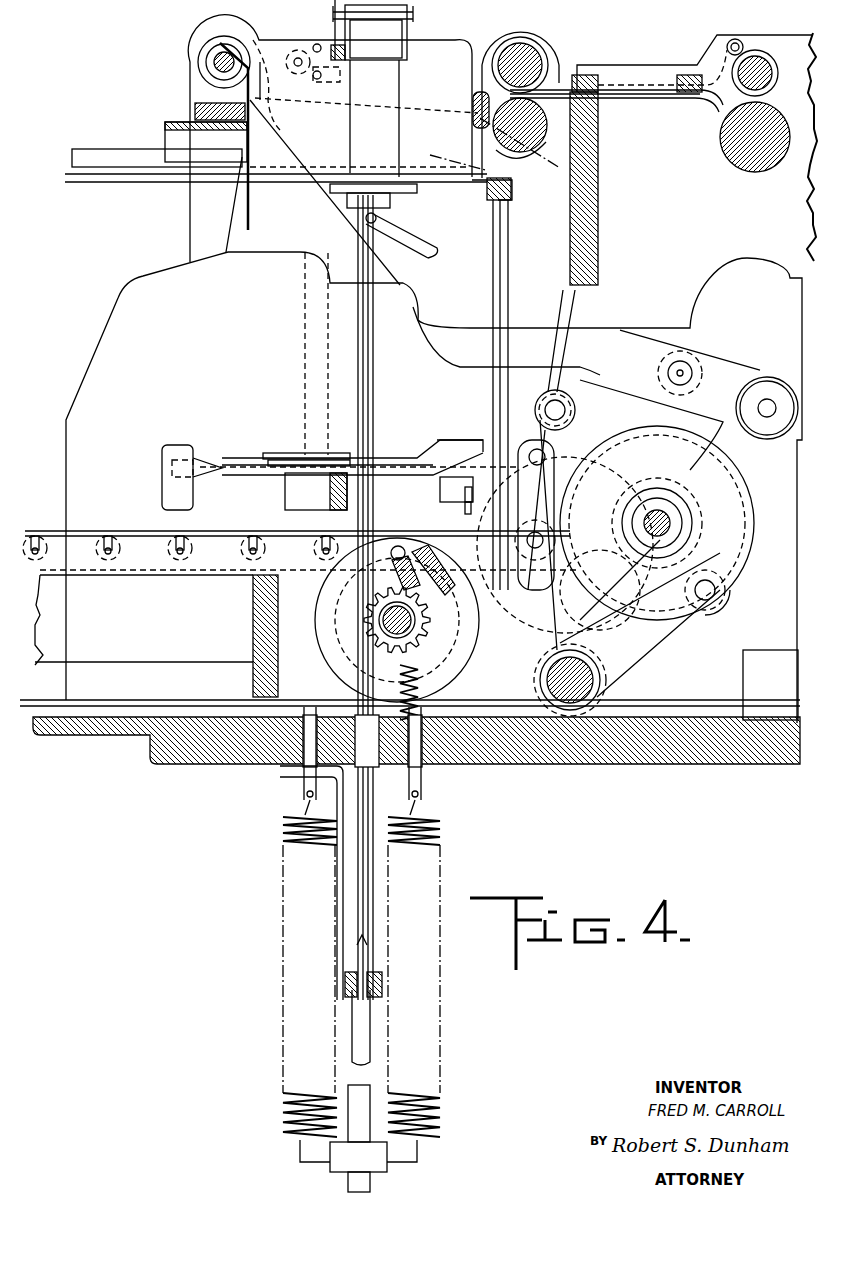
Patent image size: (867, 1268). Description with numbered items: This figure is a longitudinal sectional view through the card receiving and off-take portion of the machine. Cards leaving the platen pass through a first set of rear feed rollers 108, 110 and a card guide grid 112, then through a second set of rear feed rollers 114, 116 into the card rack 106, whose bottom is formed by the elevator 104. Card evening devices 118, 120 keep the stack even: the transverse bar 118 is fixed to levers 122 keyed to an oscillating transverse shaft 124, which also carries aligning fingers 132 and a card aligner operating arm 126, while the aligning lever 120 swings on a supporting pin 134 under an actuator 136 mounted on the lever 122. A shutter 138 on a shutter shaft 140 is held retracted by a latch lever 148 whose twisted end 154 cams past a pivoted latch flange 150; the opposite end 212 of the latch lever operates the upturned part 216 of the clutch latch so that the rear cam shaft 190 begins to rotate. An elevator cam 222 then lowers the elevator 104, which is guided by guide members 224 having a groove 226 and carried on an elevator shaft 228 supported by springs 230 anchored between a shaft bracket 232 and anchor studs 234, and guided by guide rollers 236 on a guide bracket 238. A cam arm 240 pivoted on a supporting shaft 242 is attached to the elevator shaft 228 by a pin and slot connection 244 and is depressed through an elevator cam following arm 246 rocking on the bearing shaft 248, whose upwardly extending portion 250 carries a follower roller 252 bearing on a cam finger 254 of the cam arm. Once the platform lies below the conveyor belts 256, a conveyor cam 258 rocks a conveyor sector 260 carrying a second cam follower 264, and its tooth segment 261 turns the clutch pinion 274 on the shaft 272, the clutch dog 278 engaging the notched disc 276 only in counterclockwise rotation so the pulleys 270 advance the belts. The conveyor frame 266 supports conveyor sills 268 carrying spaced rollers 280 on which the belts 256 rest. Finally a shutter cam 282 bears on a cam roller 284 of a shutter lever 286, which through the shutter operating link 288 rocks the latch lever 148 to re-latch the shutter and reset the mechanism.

The elevator 104 is at (478, 180).
The card rack 106 is at (271, 42).
The rear feed roller 108 is at (722, 137).
The rear feed roller 110 is at (762, 60).
The card guide grid 112 is at (648, 95).
The rear feed roller 114 is at (528, 140).
The rear feed roller 116 is at (530, 50).
The card evening device 118 is at (470, 110).
The aligning lever 120 is at (352, 148).
The lever 122 is at (282, 90).
The transverse shaft 124 is at (212, 58).
The card aligner operating arm 126 is at (188, 205).
The aligning finger 132 is at (246, 210).
The supporting pin 134 is at (372, 30).
The actuator 136 is at (320, 78).
The shutter 138 is at (110, 175).
The shutter shaft 140 is at (303, 330).
The latch lever 148 is at (236, 455).
The latch flange 150 is at (174, 444).
The twisted end 154 is at (197, 478).
The rear cam shaft 190 is at (645, 535).
The opposite end of latch lever 212 is at (442, 483).
The upturned part 216 is at (462, 508).
The elevator cam 222 is at (606, 412).
The guide member 224 is at (584, 293).
The groove 226 is at (509, 275).
The elevator shaft 228 is at (380, 404).
The spring 230 is at (283, 1095).
The shaft bracket 232 is at (390, 1160).
The anchor stud 234 is at (300, 778).
The guide roller 236 is at (368, 953).
The guide bracket 238 is at (337, 893).
The cam arm 240 is at (456, 368).
The supporting shaft 242 is at (773, 398).
The pin and slot connection 244 is at (378, 217).
The elevator cam following arm 246 is at (710, 600).
The bearing shaft 248 is at (595, 688).
The upwardly extending portion 250 is at (710, 493).
The follower roller 252 is at (682, 386).
The cam finger 254 is at (728, 455).
The conveyor belt 256 is at (200, 530).
The conveyor cam 258 is at (738, 535).
The conveyor sector 260 is at (528, 645).
The tooth segment 261 is at (420, 690).
The second cam follower 264 is at (675, 635).
The conveyor frame 266 is at (253, 605).
The conveyor sill 268 is at (125, 572).
The pulley 270 is at (320, 600).
The shaft 272 is at (383, 622).
The clutch pinion 274 is at (395, 595).
The notched disc 276 is at (345, 600).
The clutch dog 278 is at (432, 555).
The roller 280 is at (107, 536).
The shutter cam 282 is at (597, 605).
The cam roller 284 is at (525, 575).
The shutter lever 286 is at (548, 600).
The shutter operating link 288 is at (483, 443).